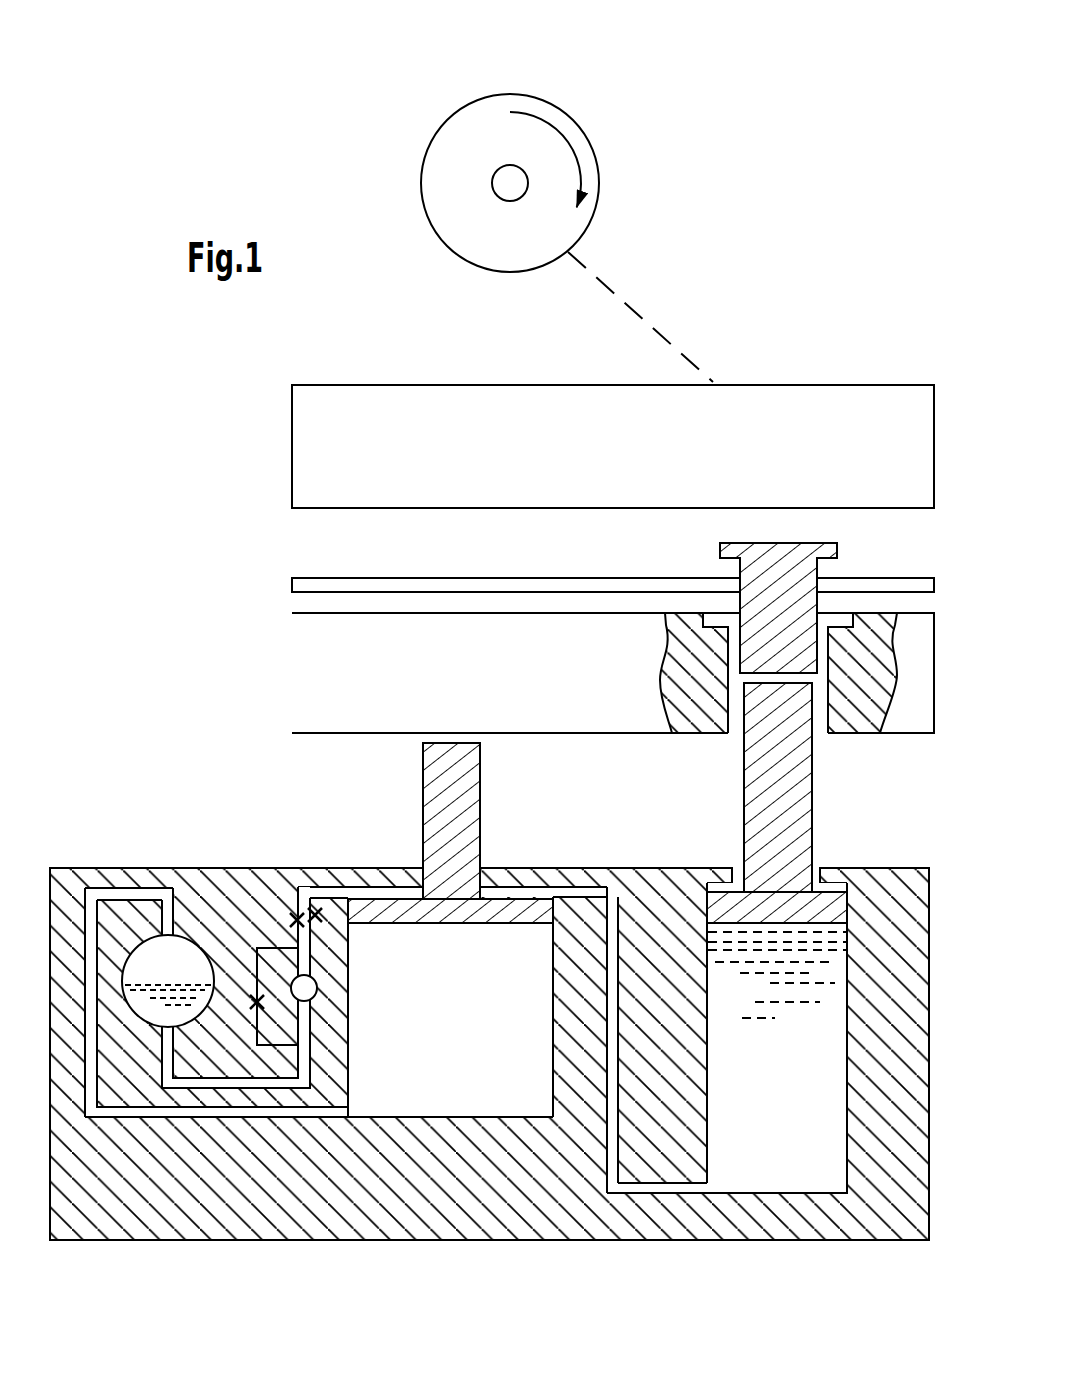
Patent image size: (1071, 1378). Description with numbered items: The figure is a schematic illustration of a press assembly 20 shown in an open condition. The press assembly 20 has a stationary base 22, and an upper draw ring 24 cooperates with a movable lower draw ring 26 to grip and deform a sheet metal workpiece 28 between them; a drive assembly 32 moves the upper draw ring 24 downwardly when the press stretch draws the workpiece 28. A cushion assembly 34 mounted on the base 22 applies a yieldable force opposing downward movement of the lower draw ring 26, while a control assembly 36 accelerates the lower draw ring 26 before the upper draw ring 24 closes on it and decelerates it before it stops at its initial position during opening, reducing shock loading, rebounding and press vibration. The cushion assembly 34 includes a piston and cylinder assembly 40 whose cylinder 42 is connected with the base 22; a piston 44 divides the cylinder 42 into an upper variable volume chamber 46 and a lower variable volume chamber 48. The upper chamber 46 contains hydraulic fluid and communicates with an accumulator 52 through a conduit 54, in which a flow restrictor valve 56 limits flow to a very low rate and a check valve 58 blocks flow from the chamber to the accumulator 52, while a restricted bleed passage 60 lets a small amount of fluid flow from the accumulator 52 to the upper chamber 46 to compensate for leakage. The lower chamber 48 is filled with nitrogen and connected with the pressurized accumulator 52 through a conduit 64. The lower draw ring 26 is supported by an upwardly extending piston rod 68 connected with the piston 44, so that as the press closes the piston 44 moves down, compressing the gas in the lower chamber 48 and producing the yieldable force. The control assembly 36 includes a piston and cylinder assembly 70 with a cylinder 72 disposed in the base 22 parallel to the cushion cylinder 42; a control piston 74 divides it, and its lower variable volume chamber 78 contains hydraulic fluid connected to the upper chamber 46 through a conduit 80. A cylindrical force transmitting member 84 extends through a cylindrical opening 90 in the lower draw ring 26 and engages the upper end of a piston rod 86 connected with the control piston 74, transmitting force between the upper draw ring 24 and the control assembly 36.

The press assembly 20 is at (712, 97).
The stationary base 22 is at (245, 1175).
The upper draw ring 24 is at (320, 460).
The lower draw ring 26 is at (574, 694).
The sheet metal workpiece 28 is at (517, 585).
The drive assembly 32 is at (598, 178).
The cushion assembly 34 is at (453, 1027).
The control assembly 36 is at (769, 998).
The piston and cylinder assembly 40 is at (450, 859).
The cylinder 42 is at (553, 1092).
The piston 44 is at (507, 912).
The upper variable volume chamber 46 is at (524, 893).
The lower variable volume chamber 48 is at (458, 1068).
The accumulator 52 is at (185, 930).
The conduit 54 is at (310, 1058).
The flow restrictor valve 56 is at (337, 938).
The check valve 58 is at (312, 988).
The restricted bleed passage 60 is at (256, 998).
The conduit 64 is at (132, 1112).
The piston rod 68 is at (477, 783).
The piston and cylinder assembly 70 is at (783, 803).
The cylinder 72 is at (847, 1143).
The control piston 74 is at (728, 905).
The lower variable volume chamber 78 is at (772, 1153).
The conduit 80 is at (668, 1188).
The force transmitting member 84 is at (797, 552).
The piston rod 86 is at (773, 848).
The cylindrical opening 90 is at (735, 717).